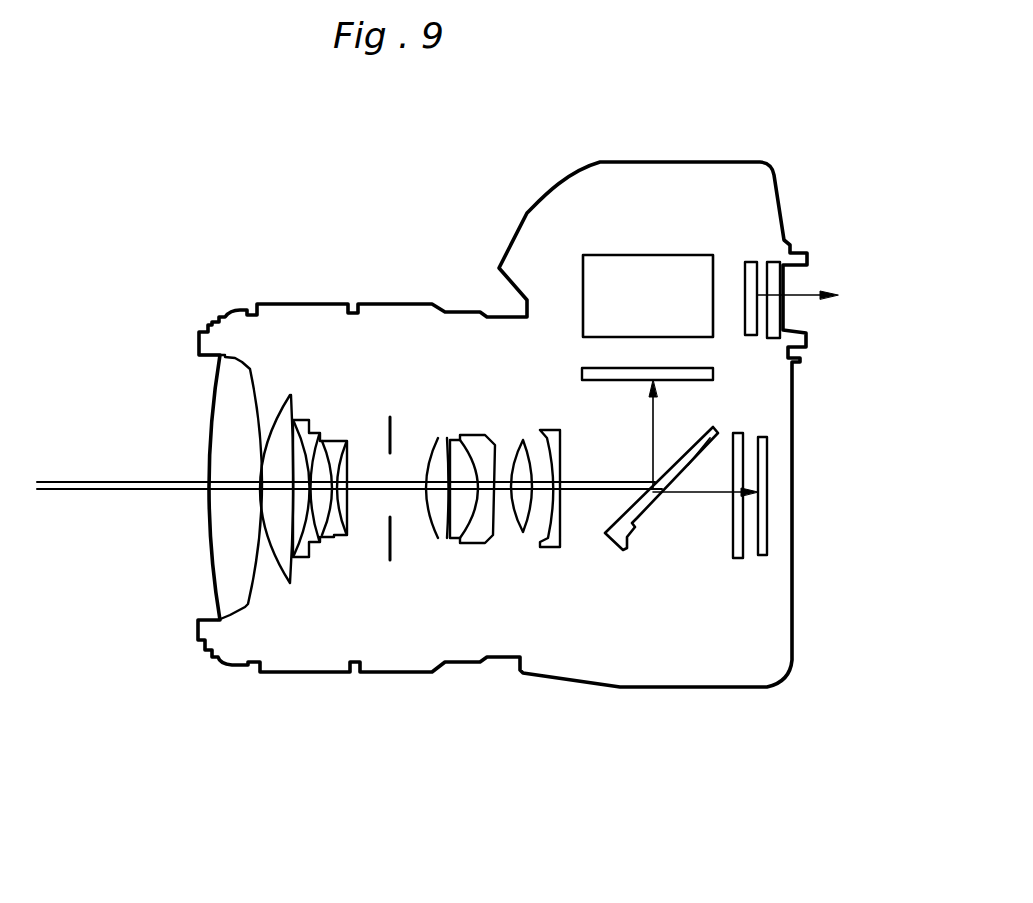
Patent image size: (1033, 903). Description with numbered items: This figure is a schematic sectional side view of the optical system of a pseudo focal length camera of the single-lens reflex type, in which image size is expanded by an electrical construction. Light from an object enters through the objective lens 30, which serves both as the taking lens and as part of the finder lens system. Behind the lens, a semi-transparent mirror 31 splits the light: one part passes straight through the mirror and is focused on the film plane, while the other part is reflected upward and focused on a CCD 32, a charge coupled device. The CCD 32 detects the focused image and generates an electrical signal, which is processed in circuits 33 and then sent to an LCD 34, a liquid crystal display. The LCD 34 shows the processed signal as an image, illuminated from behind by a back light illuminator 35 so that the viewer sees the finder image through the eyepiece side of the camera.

The objective lens 30 is at (562, 723).
The semi-transparent mirror 31 is at (623, 550).
The CCD 32 is at (703, 383).
The circuits 33 is at (602, 282).
The LCD 34 is at (773, 282).
The back light illuminator 35 is at (750, 260).